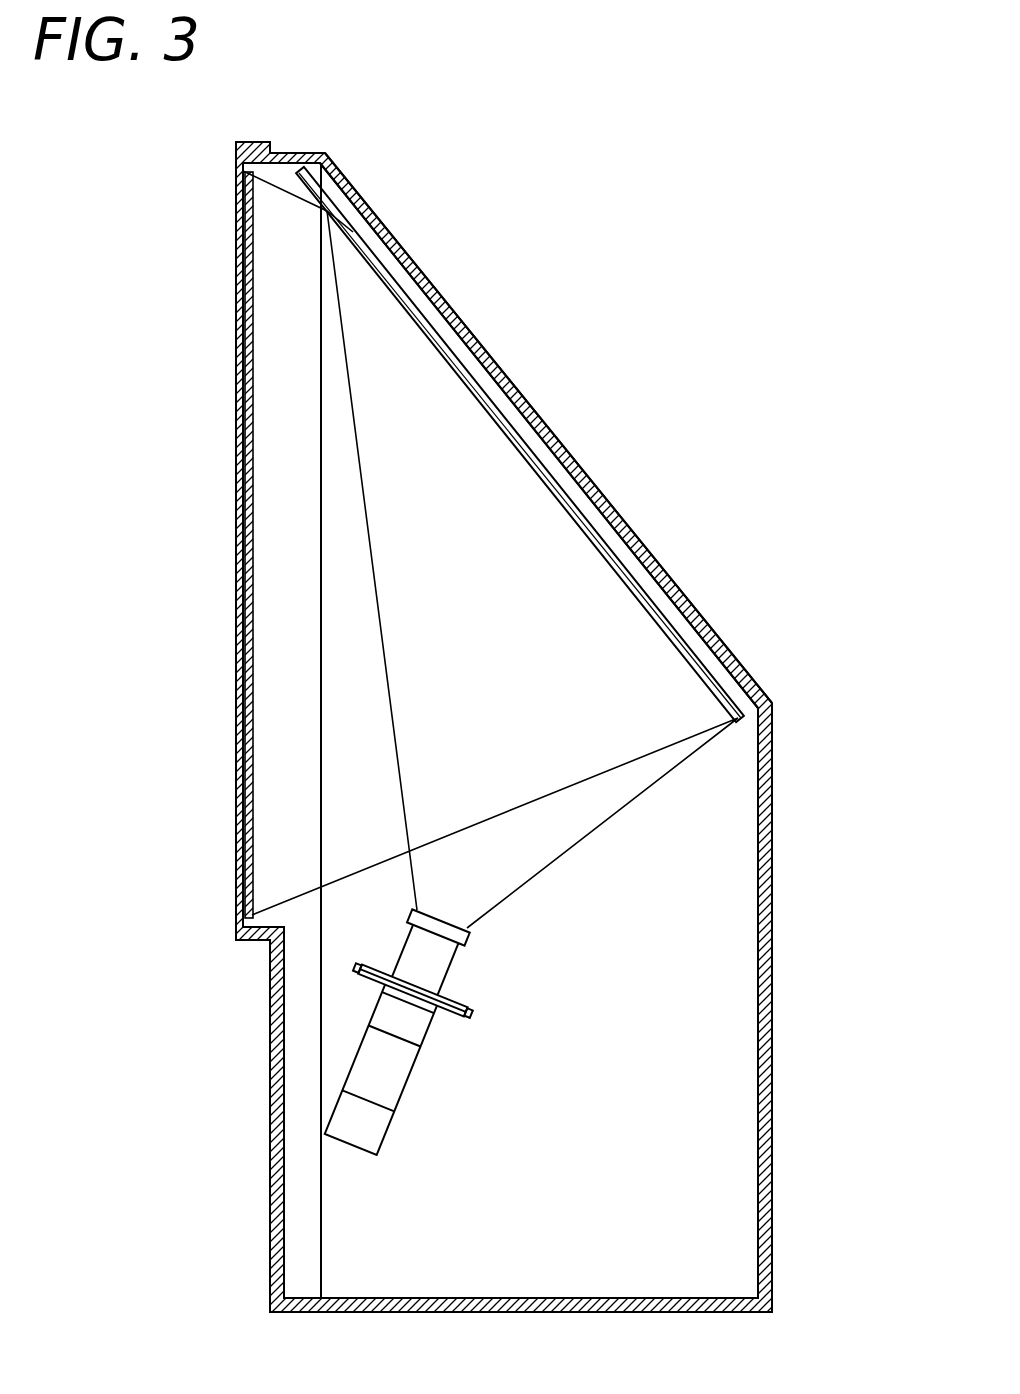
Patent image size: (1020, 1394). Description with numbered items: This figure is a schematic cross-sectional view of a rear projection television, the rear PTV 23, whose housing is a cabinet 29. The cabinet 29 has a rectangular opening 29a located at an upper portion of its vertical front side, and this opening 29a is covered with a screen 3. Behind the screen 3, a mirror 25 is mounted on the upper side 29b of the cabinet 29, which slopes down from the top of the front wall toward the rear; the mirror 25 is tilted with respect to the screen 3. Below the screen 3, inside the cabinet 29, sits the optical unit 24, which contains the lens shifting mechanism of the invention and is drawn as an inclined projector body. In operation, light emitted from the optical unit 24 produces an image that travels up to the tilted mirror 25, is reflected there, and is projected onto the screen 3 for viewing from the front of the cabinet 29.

The screen 3 is at (245, 703).
The rear PTV 23 is at (664, 404).
The optical unit 24 is at (373, 1057).
The mirror 25 is at (632, 582).
The cabinet 29 is at (773, 1047).
The rectangular opening 29a is at (236, 240).
The upper side of the cabinet 29b is at (507, 373).